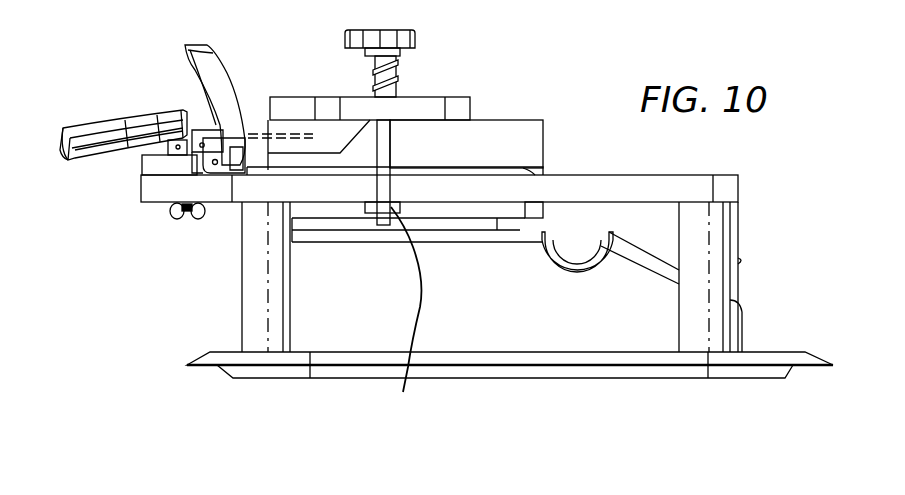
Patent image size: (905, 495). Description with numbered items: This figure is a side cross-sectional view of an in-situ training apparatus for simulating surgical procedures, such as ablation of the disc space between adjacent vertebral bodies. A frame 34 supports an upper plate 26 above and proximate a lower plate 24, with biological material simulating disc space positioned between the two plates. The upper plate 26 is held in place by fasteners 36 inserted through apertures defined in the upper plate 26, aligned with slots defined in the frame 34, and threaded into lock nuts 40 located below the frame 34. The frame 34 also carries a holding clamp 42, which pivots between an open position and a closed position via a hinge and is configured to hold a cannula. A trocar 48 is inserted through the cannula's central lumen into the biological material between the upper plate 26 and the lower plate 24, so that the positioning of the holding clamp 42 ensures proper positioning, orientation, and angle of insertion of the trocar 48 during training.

The trocar 48 is at (167, 120).
The holding clamp 42 is at (220, 82).
The fastener 36 is at (420, 42).
The upper plate 26 is at (458, 107).
The lower plate 24 is at (525, 148).
The frame 34 is at (627, 181).
The lock nut 40 is at (406, 314).